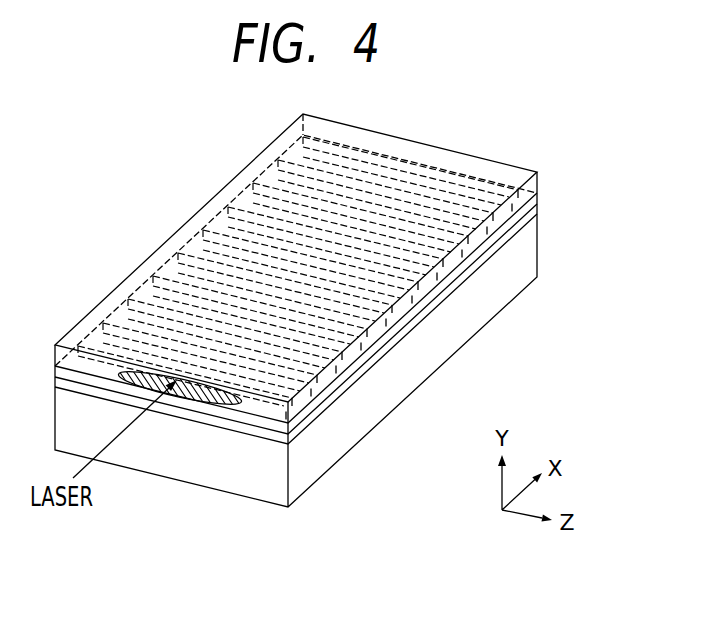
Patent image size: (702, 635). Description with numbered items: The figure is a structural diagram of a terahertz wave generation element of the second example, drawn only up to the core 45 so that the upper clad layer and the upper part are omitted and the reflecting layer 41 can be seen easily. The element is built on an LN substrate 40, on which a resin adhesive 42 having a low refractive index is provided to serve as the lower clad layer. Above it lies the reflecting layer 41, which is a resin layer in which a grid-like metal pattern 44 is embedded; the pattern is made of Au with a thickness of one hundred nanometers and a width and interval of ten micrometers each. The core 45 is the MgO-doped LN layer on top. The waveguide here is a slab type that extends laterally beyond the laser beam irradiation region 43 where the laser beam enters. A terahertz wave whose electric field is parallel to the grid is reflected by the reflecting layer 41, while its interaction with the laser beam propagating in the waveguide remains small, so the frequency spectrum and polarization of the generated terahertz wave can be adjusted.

The LN substrate 40 is at (533, 259).
The reflecting layer 41 is at (210, 417).
The resin adhesive 42 is at (248, 435).
The laser beam irradiation region 43 is at (182, 398).
The metal pattern 44 is at (473, 197).
The core 45 is at (537, 185).